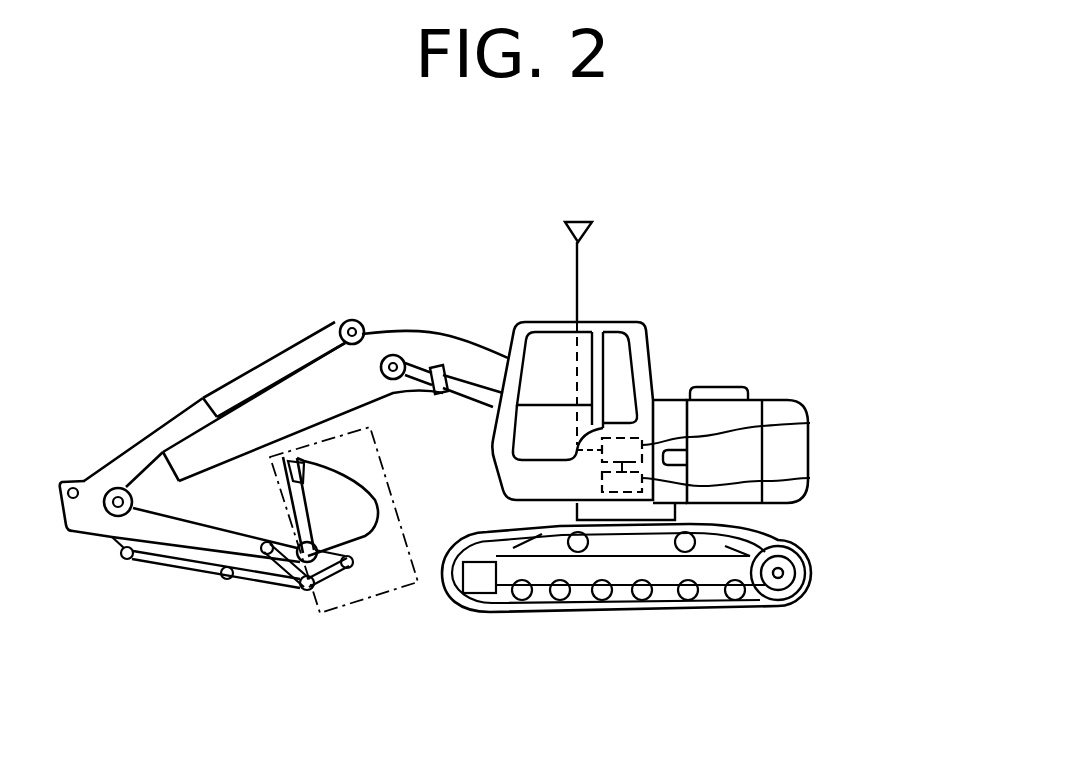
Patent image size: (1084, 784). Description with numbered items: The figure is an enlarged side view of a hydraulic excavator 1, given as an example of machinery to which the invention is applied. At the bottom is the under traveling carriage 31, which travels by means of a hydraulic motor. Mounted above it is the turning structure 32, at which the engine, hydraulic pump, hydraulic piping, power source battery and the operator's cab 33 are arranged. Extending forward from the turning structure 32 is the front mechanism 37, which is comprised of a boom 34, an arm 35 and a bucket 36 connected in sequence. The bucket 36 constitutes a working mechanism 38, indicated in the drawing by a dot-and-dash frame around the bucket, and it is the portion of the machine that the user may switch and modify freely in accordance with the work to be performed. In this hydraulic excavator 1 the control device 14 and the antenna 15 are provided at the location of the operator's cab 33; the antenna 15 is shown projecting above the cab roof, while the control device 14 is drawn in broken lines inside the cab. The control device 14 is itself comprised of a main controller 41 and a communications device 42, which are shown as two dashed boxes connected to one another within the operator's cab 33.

The hydraulic excavator 1 is at (723, 313).
The control device 14 is at (590, 462).
The antenna 15 is at (593, 225).
The under traveling carriage 31 is at (813, 573).
The turning structure 32 is at (789, 398).
The operator's cab 33 is at (586, 342).
The boom 34 is at (450, 338).
The arm 35 is at (97, 523).
The bucket 36 is at (383, 487).
The front mechanism 37 is at (195, 580).
The working mechanism 38 is at (357, 603).
The main controller 41 is at (812, 478).
The communications device 42 is at (812, 423).